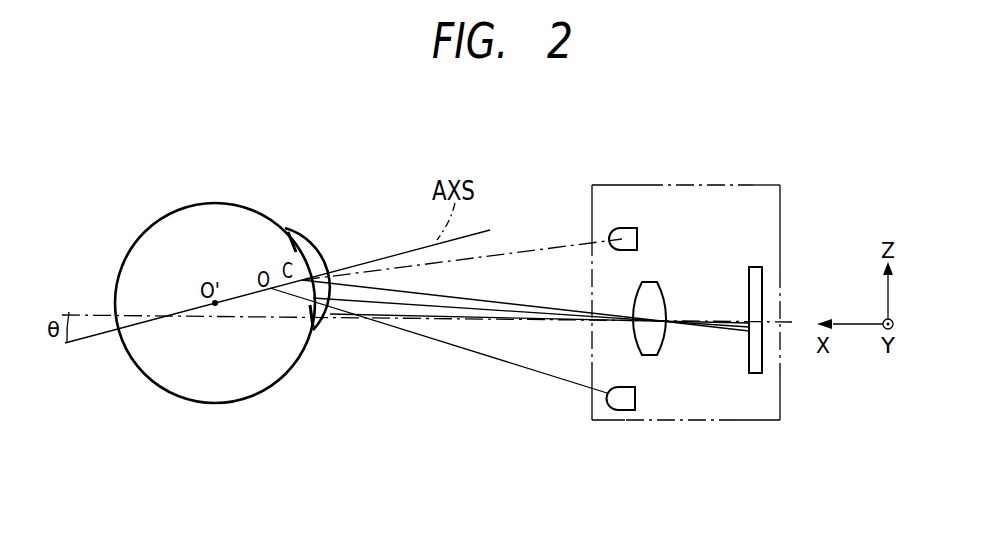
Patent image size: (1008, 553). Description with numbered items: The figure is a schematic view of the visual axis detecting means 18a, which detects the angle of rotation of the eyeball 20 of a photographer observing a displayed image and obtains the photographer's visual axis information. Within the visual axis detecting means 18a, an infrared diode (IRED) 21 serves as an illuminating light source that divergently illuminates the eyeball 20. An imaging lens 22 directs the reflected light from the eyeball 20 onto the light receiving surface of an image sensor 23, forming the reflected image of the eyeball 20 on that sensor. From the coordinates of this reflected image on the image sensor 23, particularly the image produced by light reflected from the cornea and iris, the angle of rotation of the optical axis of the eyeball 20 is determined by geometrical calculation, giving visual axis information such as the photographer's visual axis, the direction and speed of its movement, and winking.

The eyeball 20 is at (170, 223).
The infrared diode (IRED) 21 is at (628, 228).
The imaging lens 22 is at (658, 288).
The image sensor 23 is at (752, 267).
The visual axis detecting means 18a is at (713, 422).